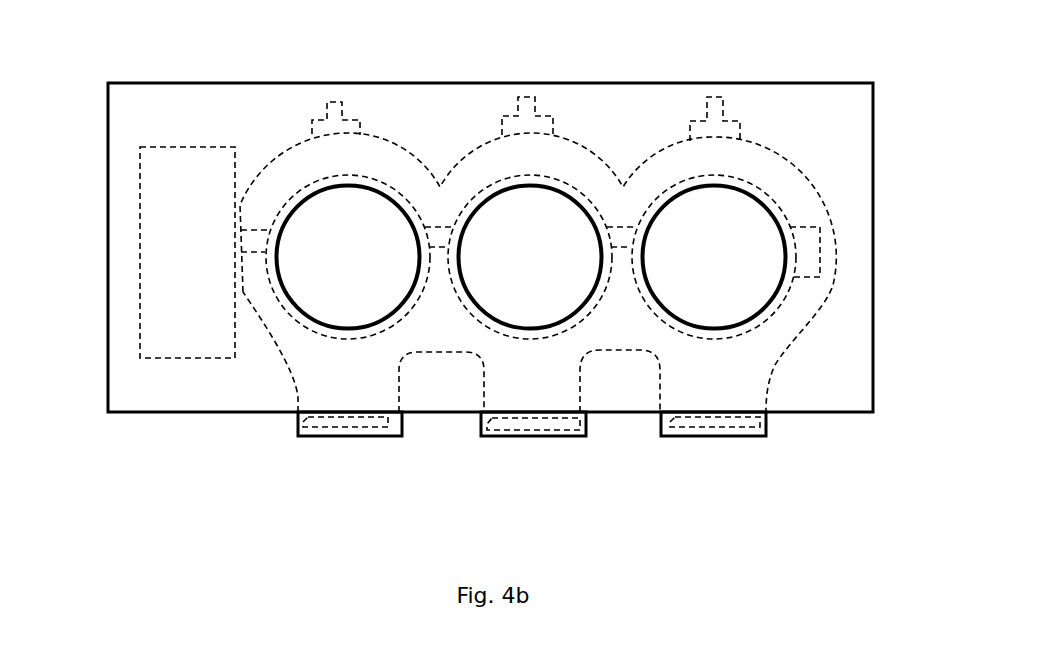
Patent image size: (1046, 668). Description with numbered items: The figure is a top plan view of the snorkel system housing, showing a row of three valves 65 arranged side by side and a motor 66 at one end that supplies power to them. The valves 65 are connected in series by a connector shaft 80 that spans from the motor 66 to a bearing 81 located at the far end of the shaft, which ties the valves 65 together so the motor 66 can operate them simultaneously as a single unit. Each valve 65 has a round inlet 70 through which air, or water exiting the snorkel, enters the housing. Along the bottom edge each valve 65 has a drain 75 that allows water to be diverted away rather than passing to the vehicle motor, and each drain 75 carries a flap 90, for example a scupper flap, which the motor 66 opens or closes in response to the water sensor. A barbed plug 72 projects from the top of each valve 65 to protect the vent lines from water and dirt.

The valve 65 is at (912, 145).
The motor 66 is at (163, 201).
The valve inlet 70 is at (727, 270).
The barbed plug 72 is at (336, 106).
The drain 75 is at (302, 434).
The connector shaft 80 is at (253, 238).
The bearing 81 is at (812, 252).
The flap 90 is at (365, 425).